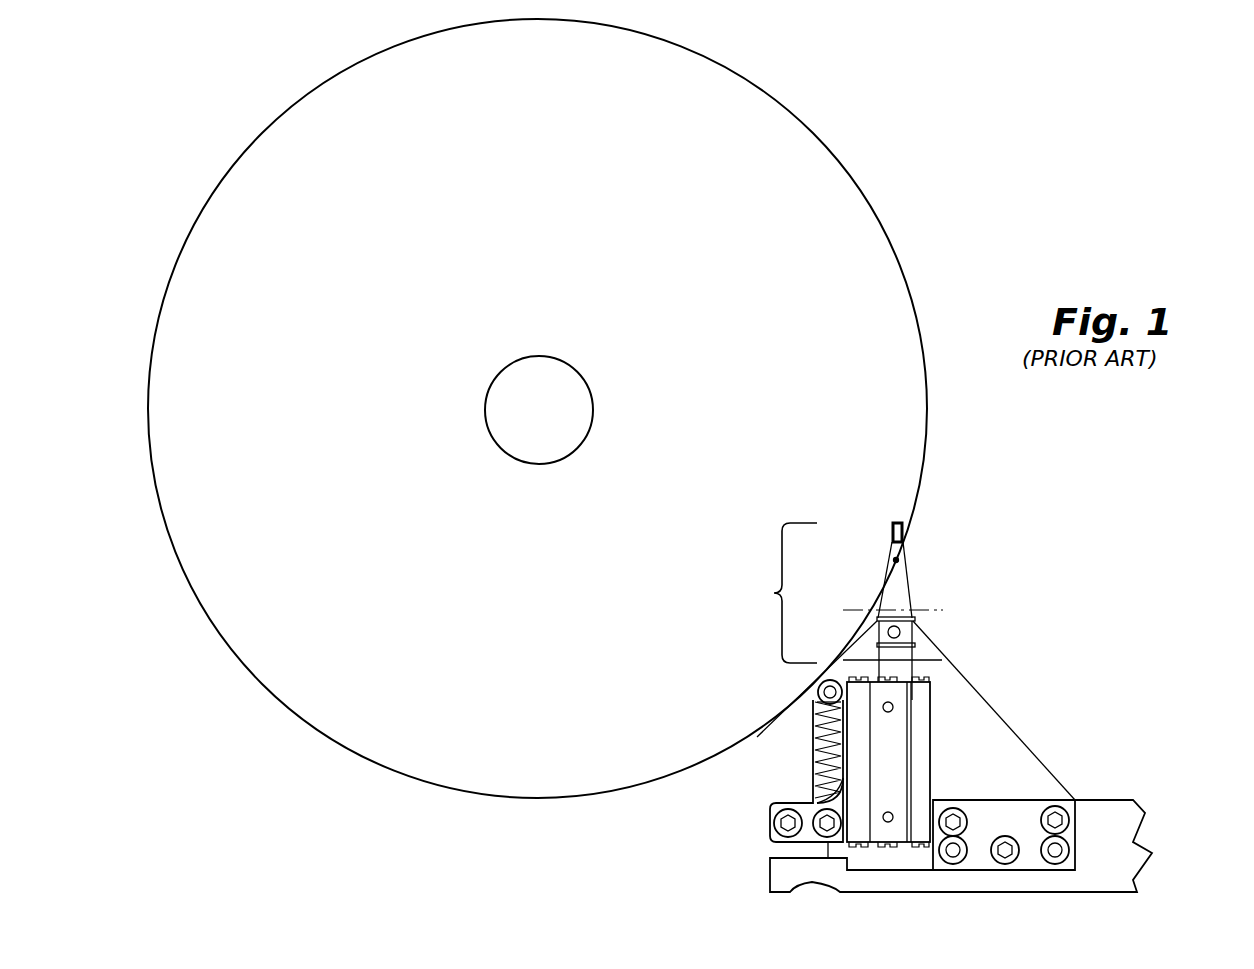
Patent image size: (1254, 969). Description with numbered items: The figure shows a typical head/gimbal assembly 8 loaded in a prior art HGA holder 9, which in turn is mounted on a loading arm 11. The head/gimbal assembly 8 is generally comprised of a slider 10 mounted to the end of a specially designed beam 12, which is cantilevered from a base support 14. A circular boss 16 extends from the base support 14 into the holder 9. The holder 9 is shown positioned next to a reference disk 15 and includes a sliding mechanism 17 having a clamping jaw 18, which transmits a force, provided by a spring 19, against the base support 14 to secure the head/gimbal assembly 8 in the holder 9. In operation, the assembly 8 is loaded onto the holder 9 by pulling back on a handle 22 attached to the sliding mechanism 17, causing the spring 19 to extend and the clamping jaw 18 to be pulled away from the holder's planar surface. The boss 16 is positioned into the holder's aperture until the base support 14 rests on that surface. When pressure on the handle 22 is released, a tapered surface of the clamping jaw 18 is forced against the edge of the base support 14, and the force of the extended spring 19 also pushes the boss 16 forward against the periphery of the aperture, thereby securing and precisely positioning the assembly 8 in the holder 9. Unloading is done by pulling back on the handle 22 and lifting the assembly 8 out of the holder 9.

The head/gimbal assembly 8 is at (780, 593).
The HGA holder 9 is at (1018, 712).
The slider 10 is at (903, 527).
The loading arm 11 is at (1113, 807).
The beam 12 is at (907, 582).
The base support 14 is at (917, 626).
The reference disk 15 is at (928, 407).
The circular boss 16 is at (888, 628).
The sliding mechanism 17 is at (930, 738).
The clamping jaw 18 is at (907, 654).
The spring 19 is at (813, 747).
The handle 22 is at (768, 813).